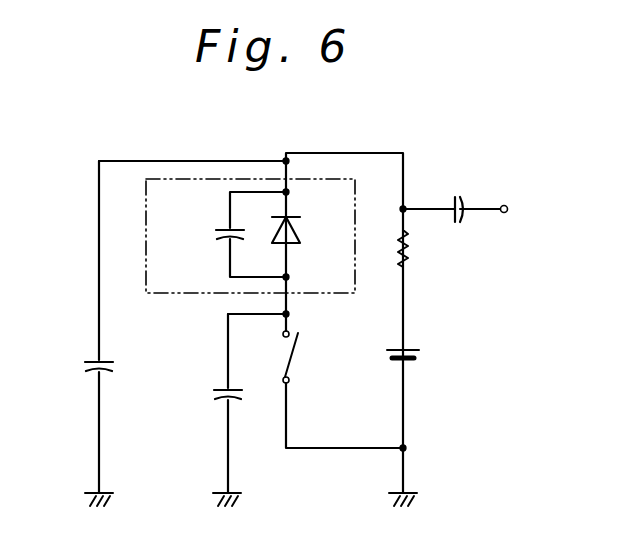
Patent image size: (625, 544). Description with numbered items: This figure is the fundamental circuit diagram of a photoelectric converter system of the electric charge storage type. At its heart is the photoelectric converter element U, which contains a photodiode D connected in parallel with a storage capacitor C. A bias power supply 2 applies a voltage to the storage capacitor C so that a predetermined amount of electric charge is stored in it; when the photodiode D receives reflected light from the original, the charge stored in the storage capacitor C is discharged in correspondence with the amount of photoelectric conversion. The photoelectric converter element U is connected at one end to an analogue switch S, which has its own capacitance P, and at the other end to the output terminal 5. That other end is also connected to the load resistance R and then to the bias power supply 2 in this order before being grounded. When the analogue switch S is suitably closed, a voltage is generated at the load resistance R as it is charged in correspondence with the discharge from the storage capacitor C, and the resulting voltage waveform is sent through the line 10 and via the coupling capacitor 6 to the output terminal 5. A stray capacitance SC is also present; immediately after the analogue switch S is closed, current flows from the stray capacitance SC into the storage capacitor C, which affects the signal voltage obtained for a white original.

The stray capacitance SC is at (93, 360).
The photoelectric converter element U is at (210, 294).
The storage capacitor C is at (223, 228).
The photodiode D is at (296, 232).
The capacitance P is at (222, 388).
The analogue switch S is at (289, 357).
The load resistance R is at (408, 250).
The bias power supply 2 is at (412, 352).
The line 10 is at (425, 207).
The coupling capacitor 6 is at (462, 222).
The output terminal 5 is at (509, 214).